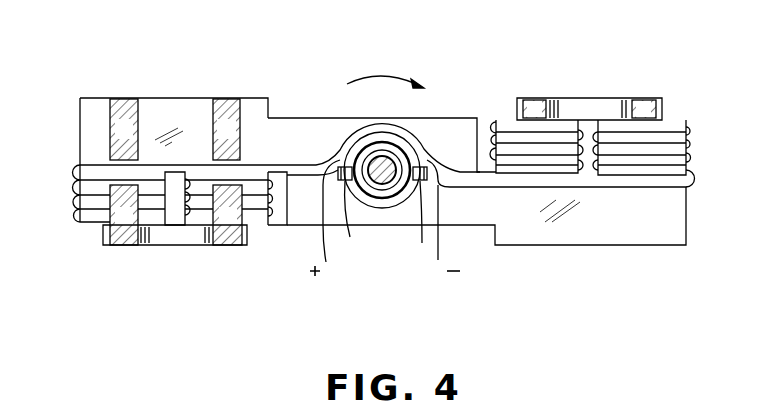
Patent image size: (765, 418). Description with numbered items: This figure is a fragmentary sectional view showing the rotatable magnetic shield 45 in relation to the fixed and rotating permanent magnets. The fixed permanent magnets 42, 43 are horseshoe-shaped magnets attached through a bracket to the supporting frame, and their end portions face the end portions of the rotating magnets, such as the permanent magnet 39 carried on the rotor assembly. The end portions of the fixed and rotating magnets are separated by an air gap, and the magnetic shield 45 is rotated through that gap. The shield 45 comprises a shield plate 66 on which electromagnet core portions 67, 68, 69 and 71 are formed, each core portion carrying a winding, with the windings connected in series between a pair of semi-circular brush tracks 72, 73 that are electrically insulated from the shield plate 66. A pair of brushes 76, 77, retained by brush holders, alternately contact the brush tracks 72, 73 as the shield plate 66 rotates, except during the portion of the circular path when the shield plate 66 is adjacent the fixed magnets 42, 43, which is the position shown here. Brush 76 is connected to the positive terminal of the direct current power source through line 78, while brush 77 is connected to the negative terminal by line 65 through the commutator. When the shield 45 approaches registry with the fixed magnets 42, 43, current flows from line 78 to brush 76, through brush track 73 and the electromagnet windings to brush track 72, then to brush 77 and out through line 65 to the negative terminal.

The horseshoe-shaped permanent magnet 39 is at (165, 238).
The fixed permanent magnet 42 is at (174, 99).
The fixed permanent magnet 43 is at (137, 265).
The magnetic shield 45 is at (450, 79).
The line 65 is at (447, 258).
The shield plate 66 is at (294, 125).
The electromagnet core portion 67 is at (88, 212).
The electromagnet core portion 68 is at (258, 218).
The electromagnet core portion 69 is at (503, 132).
The electromagnet core portion 71 is at (672, 124).
The brush track 72 is at (404, 145).
The brush track 73 is at (384, 209).
The brush 76 is at (350, 236).
The brush 77 is at (418, 217).
The line 78 is at (326, 263).